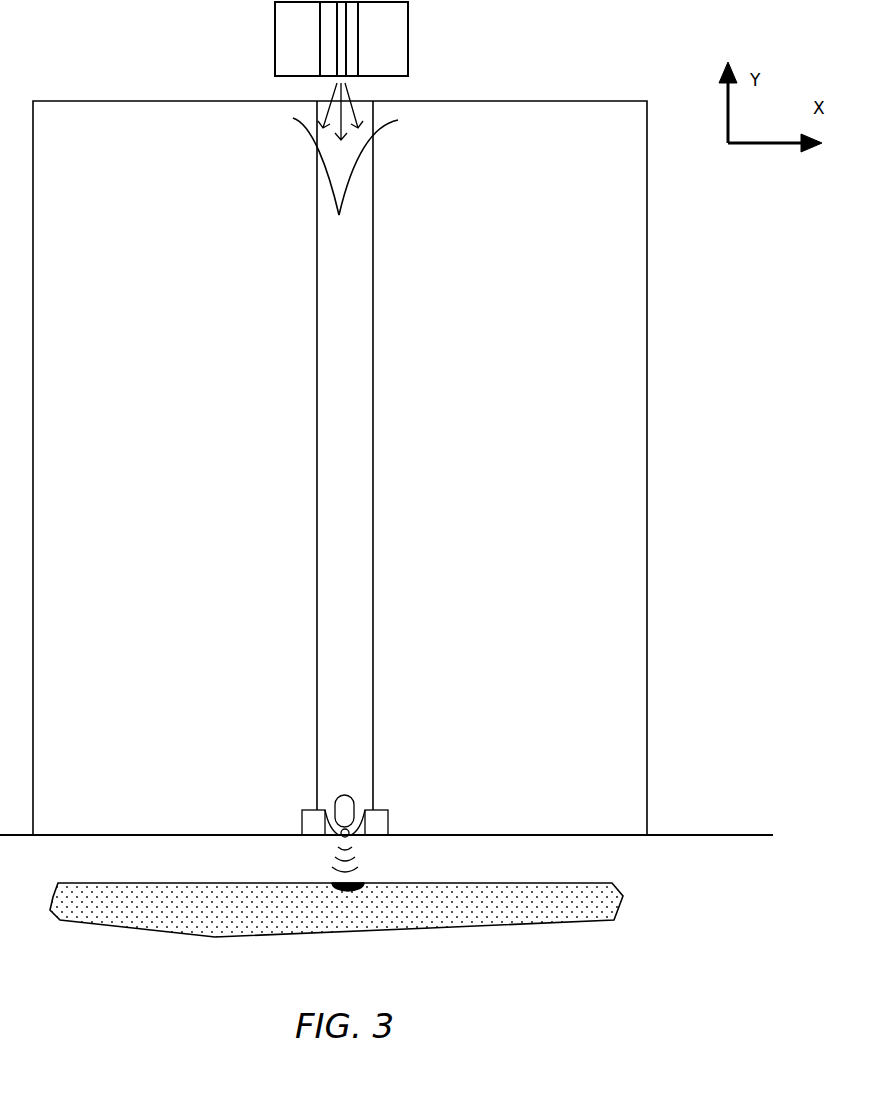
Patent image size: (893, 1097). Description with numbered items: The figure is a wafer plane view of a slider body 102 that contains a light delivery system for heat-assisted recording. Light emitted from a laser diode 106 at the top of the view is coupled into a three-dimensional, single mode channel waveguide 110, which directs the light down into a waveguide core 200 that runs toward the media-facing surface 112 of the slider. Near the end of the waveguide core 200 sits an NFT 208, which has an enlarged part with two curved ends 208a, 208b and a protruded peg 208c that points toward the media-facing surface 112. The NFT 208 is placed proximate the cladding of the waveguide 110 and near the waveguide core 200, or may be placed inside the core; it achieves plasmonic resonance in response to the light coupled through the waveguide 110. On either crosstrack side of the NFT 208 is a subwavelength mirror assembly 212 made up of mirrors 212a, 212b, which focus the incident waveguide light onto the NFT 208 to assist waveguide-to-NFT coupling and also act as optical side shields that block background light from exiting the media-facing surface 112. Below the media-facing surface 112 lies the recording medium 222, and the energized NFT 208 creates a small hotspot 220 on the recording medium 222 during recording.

The slider body 102 is at (538, 101).
The laser diode 106 is at (317, 29).
The channel waveguide 110 is at (222, 289).
The media-facing surface 112 is at (727, 835).
The waveguide core 200 is at (318, 651).
The NFT 208 is at (320, 808).
The curved end 208a is at (375, 795).
The curved end 208b is at (352, 840).
The protruded peg 208c is at (340, 838).
The subwavelength mirror assembly 212 is at (438, 849).
The mirror 212a is at (302, 820).
The mirror 212b is at (388, 822).
The hotspot 220 is at (345, 893).
The recording medium 222 is at (578, 905).